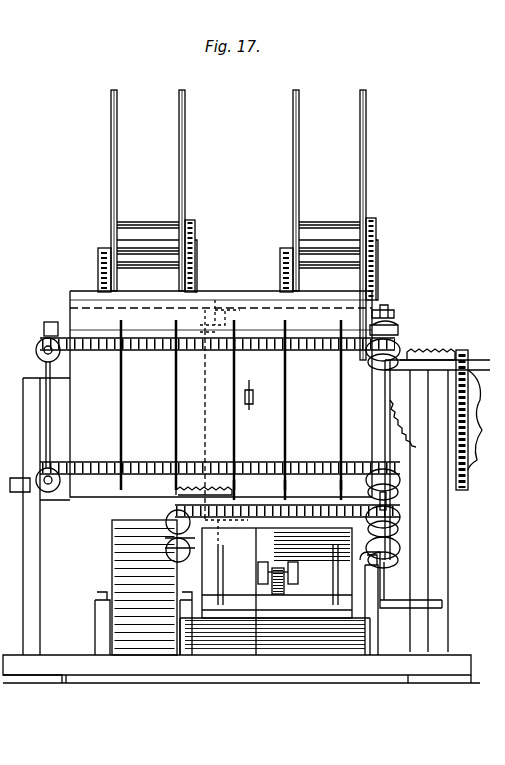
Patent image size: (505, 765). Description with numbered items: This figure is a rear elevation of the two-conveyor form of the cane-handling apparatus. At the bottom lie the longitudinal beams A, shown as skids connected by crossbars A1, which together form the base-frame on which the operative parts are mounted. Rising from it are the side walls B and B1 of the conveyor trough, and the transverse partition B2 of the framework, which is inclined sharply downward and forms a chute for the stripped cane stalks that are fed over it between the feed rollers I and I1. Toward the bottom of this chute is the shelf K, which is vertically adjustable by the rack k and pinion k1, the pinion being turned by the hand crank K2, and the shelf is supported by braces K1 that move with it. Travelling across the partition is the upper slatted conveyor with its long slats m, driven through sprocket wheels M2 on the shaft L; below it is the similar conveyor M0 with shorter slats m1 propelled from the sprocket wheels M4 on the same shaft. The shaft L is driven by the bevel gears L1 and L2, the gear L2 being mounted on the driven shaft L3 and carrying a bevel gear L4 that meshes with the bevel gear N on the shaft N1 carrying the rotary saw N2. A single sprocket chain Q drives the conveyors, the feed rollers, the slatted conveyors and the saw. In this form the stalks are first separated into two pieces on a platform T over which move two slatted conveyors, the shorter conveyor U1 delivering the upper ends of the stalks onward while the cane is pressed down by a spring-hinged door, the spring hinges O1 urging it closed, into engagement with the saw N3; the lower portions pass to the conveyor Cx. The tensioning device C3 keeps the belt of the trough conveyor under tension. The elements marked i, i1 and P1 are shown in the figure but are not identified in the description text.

The side wall B is at (185, 163).
The side wall B1 is at (111, 163).
The transverse partition B2 is at (70, 298).
The feed roller I is at (142, 232).
The feed roller I1 is at (126, 250).
The chain i is at (195, 232).
The chain guide i1 is at (195, 276).
The sprocket chain Q is at (98, 255).
The bevel gear N is at (198, 322).
The shaft N1 is at (205, 403).
The rotary saw N2 is at (190, 482).
The saw N3 is at (437, 347).
The shaft L is at (384, 411).
The bevel gear L1 is at (390, 322).
The bevel gear L2 is at (380, 305).
The driven shaft L3 is at (221, 318).
The bevel gear L4 is at (216, 300).
The conveyor M0 is at (400, 520).
The sprocket wheel M2 is at (395, 345).
The sprocket wheel M4 is at (400, 544).
The conveyor U1 is at (443, 352).
The platform T is at (465, 352).
The spring hinge O1 is at (246, 394).
The slat m is at (287, 441).
The shorter slat m1 is at (287, 501).
The shelf K is at (300, 535).
The brace K1 is at (221, 610).
The hand crank K2 is at (443, 605).
The rack k is at (272, 586).
The pinion k1 is at (268, 564).
The pulley shaft P1 is at (18, 492).
The tensioning device C3 is at (93, 613).
The conveyor Cx is at (146, 635).
The longitudinal beam A is at (30, 677).
The crossbar A1 is at (92, 677).